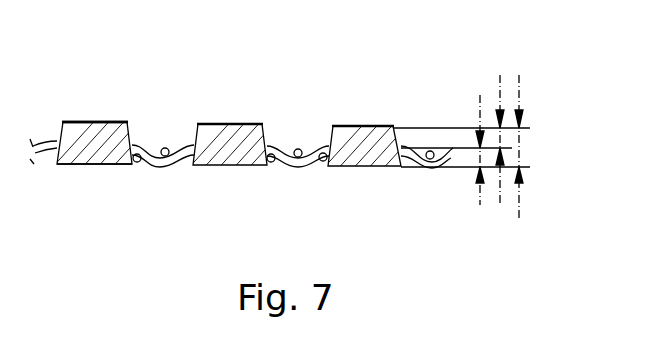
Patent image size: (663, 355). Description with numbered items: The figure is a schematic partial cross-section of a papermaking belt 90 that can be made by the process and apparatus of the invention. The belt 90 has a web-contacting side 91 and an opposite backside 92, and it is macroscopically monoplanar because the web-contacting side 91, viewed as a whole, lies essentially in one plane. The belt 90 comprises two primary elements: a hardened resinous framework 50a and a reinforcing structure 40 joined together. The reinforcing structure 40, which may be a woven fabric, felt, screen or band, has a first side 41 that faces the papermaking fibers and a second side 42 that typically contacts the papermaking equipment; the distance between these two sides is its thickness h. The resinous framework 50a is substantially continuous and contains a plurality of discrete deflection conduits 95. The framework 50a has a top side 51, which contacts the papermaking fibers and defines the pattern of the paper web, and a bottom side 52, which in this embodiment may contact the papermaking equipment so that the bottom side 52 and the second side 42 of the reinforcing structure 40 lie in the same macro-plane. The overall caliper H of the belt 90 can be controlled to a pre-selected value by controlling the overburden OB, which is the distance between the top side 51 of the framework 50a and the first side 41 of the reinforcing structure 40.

The papermaking belt 90 is at (376, 36).
The web-contacting side 91 is at (113, 105).
The backside 92 is at (114, 182).
The discrete deflection conduits 95 is at (167, 110).
The top side of the framework 51 is at (233, 112).
The resinous framework 50a is at (205, 176).
The reinforcing structure 40 is at (160, 178).
The first side of the reinforcing structure 41 is at (305, 113).
The second side of the reinforcing structure 42 is at (300, 176).
The bottom side of the framework 52 is at (256, 172).
The overburden OB is at (500, 100).
The caliper H is at (520, 148).
The thickness of the reinforcing structure h is at (480, 190).